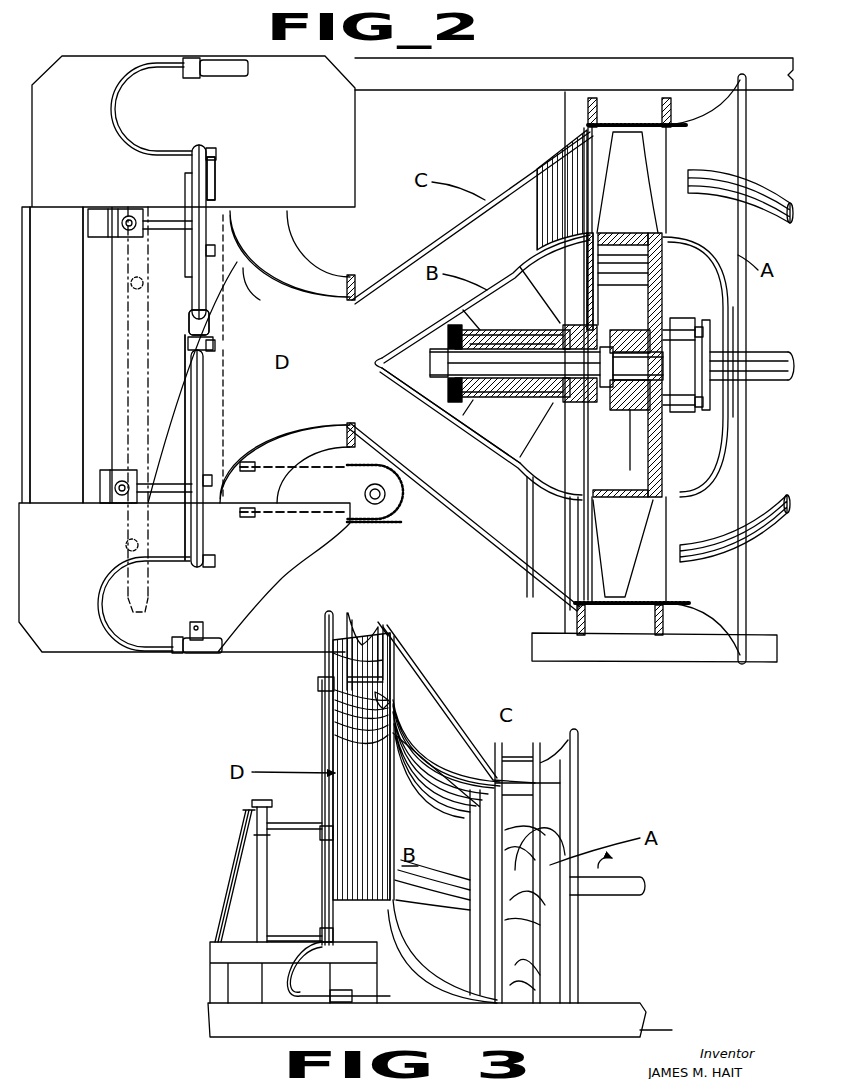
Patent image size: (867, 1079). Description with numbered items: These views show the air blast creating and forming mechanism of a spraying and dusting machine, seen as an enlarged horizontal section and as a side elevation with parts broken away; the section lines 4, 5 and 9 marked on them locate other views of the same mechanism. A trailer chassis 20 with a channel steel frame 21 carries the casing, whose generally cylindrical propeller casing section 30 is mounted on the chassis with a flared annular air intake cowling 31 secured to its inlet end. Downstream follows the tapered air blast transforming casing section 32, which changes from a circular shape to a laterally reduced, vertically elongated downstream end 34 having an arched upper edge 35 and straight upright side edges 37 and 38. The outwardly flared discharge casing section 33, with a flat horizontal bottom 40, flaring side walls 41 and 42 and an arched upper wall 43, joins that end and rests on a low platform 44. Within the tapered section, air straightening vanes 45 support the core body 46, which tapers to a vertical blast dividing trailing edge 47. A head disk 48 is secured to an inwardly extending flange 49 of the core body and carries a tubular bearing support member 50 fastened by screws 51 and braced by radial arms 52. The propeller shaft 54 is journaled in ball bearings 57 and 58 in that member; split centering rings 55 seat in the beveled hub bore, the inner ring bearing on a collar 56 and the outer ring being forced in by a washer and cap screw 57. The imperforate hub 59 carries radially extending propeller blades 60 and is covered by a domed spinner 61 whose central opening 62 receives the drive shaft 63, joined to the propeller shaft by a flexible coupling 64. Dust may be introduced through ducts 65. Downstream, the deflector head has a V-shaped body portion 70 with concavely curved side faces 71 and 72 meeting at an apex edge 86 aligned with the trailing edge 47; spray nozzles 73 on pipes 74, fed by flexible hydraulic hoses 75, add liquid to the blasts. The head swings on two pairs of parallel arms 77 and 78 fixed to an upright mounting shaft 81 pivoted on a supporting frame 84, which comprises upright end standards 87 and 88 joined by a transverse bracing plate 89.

In FIG. 2, the section line 4- 4 is at (228, 185).
In FIG. 2, the section line 5- 5 is at (358, 92).
In FIG. 2, the section line 9- 9 is at (668, 14).
In FIG. 2, the trailer chassis 20 is at (540, 636).
In FIG. 3, the trailer chassis 20 is at (642, 1005).
In FIG. 2, the channel steel frame 21 is at (546, 76).
In FIG. 3, the channel steel frame 21 is at (228, 1022).
In FIG. 2, the propeller casing section 30 is at (626, 124).
In FIG. 3, the propeller casing section 30 is at (518, 757).
In FIG. 2, the air intake cowling 31 is at (745, 143).
In FIG. 3, the air intake cowling 31 is at (563, 771).
In FIG. 2, the tapered air blast transforming casing section 32 is at (455, 200).
In FIG. 3, the tapered air blast transforming casing section 32 is at (452, 725).
In FIG. 2, the discharge casing section 33 is at (285, 290).
In FIG. 3, the downstream end 34 is at (397, 648).
In FIG. 3, the arched upper edge 35 is at (386, 630).
In FIG. 2, the upright side edge 37 is at (355, 298).
In FIG. 2, the upright side edge 38 is at (355, 430).
In FIG. 2, the flat horizontal bottom 40 is at (286, 332).
In FIG. 3, the flat horizontal bottom 40 is at (436, 951).
In FIG. 2, the outwardly flaring side wall 41 is at (243, 456).
In FIG. 2, the outwardly flaring side wall 42 is at (243, 270).
In FIG. 3, the arched upper wall 43 is at (360, 642).
In FIG. 3, the low platform 44 is at (247, 953).
In FIG. 2, the air straightening vanes 45 is at (548, 216).
In FIG. 3, the air straightening vanes 45 is at (474, 847).
In FIG. 2, the core body 46 is at (515, 470).
In FIG. 3, the core body 46 is at (399, 830).
In FIG. 2, the blast dividing trailing edge 47 is at (382, 341).
In FIG. 2, the head disk 48 is at (596, 288).
In FIG. 2, the inwardly extending flange 49 is at (595, 245).
In FIG. 2, the tubular bearing support member 50 is at (535, 330).
In FIG. 2, the screws 51 is at (597, 330).
In FIG. 2, the arms 52 is at (520, 297).
In FIG. 2, the propeller shaft 54 is at (497, 362).
In FIG. 2, the split centering rings 55 is at (650, 322).
In FIG. 2, the collar 56 is at (631, 367).
In FIG. 2, the ball bearing 57 is at (700, 422).
In FIG. 2, the ball bearing 58 is at (565, 392).
In FIG. 2, the propeller hub 59 is at (662, 272).
In FIG. 3, the propeller hub 59 is at (520, 905).
In FIG. 2, the propeller blades 60 is at (608, 217).
In FIG. 3, the propeller blades 60 is at (518, 857).
In FIG. 2, the domed spinner 61 is at (730, 463).
In FIG. 3, the domed spinner 61 is at (552, 826).
In FIG. 2, the central opening 62 is at (735, 407).
In FIG. 2, the drive shaft 63 is at (762, 356).
In FIG. 3, the drive shaft 63 is at (642, 885).
In FIG. 2, the flexible coupling 64 is at (712, 322).
In FIG. 2, the ducts 65 is at (780, 200).
In FIG. 2, the body portion 70 is at (244, 382).
In FIG. 3, the body portion 70 is at (362, 748).
In FIG. 2, the side face 71 is at (258, 325).
In FIG. 2, the side face 72 is at (255, 372).
In FIG. 3, the side face 72 is at (358, 770).
In FIG. 2, the spray nozzles 73 is at (216, 152).
In FIG. 3, the spray nozzles 73 is at (380, 700).
In FIG. 2, the pipes 74 is at (196, 190).
In FIG. 3, the pipes 74 is at (324, 869).
In FIG. 2, the flexible hydraulic hoses 75 is at (112, 112).
In FIG. 3, the flexible hydraulic hoses 75 is at (270, 978).
In FIG. 2, the head support arm 77 is at (168, 222).
In FIG. 2, the head support arm 78 is at (180, 490).
In FIG. 3, the head support arm 78 is at (286, 826).
In FIG. 2, the upright mounting shaft 81 is at (128, 230).
In FIG. 3, the upright mounting shaft 81 is at (265, 898).
In FIG. 2, the supporting frame 84 is at (95, 358).
In FIG. 3, the supporting frame 84 is at (250, 866).
In FIG. 2, the apex edge 86 is at (386, 372).
In FIG. 2, the upright end standard 87 is at (100, 222).
In FIG. 2, the upright end standard 88 is at (100, 497).
In FIG. 3, the upright end standard 88 is at (243, 878).
In FIG. 2, the transverse bracing plate 89 is at (34, 405).
In FIG. 3, the transverse bracing plate 89 is at (243, 843).